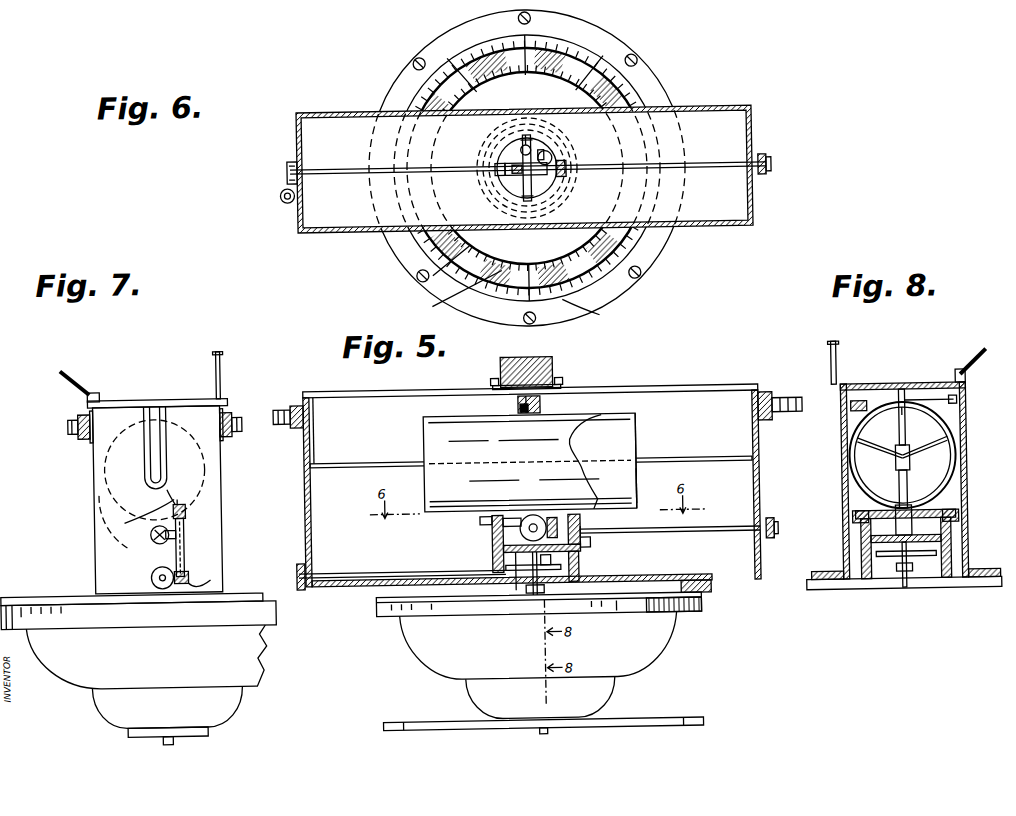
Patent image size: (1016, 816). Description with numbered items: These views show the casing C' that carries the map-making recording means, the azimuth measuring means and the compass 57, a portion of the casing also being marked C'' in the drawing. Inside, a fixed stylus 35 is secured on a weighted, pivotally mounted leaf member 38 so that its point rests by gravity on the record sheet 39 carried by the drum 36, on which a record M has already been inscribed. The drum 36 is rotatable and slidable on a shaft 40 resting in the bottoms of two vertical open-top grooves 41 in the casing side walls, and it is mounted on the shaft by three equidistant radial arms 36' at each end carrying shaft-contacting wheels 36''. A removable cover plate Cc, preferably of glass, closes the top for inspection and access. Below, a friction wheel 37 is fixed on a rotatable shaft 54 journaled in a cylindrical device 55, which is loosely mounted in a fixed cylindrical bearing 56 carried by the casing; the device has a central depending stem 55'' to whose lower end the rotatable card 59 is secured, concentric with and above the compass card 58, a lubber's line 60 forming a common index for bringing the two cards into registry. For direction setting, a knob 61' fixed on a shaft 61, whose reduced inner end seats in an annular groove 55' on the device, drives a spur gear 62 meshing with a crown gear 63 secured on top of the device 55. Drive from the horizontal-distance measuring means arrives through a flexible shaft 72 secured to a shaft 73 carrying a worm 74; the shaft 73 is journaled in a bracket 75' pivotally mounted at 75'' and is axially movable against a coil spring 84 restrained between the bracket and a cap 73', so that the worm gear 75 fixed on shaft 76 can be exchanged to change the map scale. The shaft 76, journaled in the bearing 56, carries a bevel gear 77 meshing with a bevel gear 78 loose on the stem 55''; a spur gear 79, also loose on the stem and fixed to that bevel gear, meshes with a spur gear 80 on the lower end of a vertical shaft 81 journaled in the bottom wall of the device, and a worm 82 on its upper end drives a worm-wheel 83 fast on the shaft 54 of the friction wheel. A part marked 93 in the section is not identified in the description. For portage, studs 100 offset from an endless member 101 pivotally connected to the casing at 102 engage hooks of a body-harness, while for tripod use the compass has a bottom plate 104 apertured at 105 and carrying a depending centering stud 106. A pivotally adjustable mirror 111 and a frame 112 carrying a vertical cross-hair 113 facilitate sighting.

In FIG. 5, the fixed stylus 35 is at (540, 400).
In FIG. 8, the fixed stylus 35 is at (906, 395).
In FIG. 5, the drum 36 is at (660, 466).
In FIG. 7, the drum 36 is at (93, 522).
In FIG. 8, the drum 36 is at (922, 454).
In FIG. 8, the arms 36' is at (857, 469).
In FIG. 8, the shaft-contacting wheels 36'' is at (879, 475).
In FIG. 6, the friction wheel 37 is at (520, 182).
In FIG. 5, the friction wheel 37 is at (503, 524).
In FIG. 8, the friction wheel 37 is at (912, 512).
In FIG. 5, the leaf member 38 is at (538, 406).
In FIG. 8, the leaf member 38 is at (930, 398).
In FIG. 5, the record sheet 39 is at (638, 427).
In FIG. 8, the record sheet 39 is at (945, 430).
In FIG. 5, the shaft 40 is at (360, 466).
In FIG. 7, the shaft 40 is at (205, 468).
In FIG. 5, the grooves 41 is at (320, 442).
In FIG. 7, the grooves 41 is at (160, 425).
In FIG. 6, the shaft 54 is at (548, 176).
In FIG. 5, the shaft 54 is at (492, 545).
In FIG. 8, the shaft 54 is at (860, 538).
In FIG. 5, the cylindrical device 55 is at (574, 572).
In FIG. 8, the cylindrical device 55 is at (932, 526).
In FIG. 5, the annular groove 55' is at (512, 549).
In FIG. 8, the stem 55'' is at (902, 584).
In FIG. 5, the fixed cylindrical bearing 56 is at (580, 568).
In FIG. 8, the fixed cylindrical bearing 56 is at (950, 540).
In FIG. 6, the compass 57 is at (398, 80).
In FIG. 5, the compass 57 is at (418, 650).
In FIG. 7, the compass 57 is at (252, 665).
In FIG. 6, the compass card 58 is at (615, 292).
In FIG. 5, the compass card 58 is at (696, 586).
In FIG. 6, the rotatable card 59 is at (585, 313).
In FIG. 5, the rotatable card 59 is at (485, 600).
In FIG. 7, the rotatable card 59 is at (139, 611).
In FIG. 8, the rotatable card 59 is at (856, 590).
In FIG. 6, the lubber's line 60 is at (459, 294).
In FIG. 6, the shaft 61 is at (528, 156).
In FIG. 5, the shaft 61 is at (658, 519).
In FIG. 6, the knob 61' is at (784, 158).
In FIG. 5, the knob 61' is at (784, 511).
In FIG. 6, the spur gear 62 is at (566, 170).
In FIG. 5, the spur gear 62 is at (582, 540).
In FIG. 6, the crown gear 63 is at (560, 148).
In FIG. 5, the crown gear 63 is at (482, 520).
In FIG. 8, the crown gear 63 is at (855, 520).
In FIG. 7, the flexible shaft 72 is at (205, 632).
In FIG. 7, the shaft 73 is at (212, 546).
In FIG. 7, the cap 73' is at (215, 493).
In FIG. 6, the worm 74 is at (283, 200).
In FIG. 7, the worm 74 is at (190, 576).
In FIG. 5, the worm gear 75 is at (298, 588).
In FIG. 7, the worm gear 75 is at (137, 622).
In FIG. 6, the bracket 75' is at (277, 153).
In FIG. 7, the bracket 75' is at (149, 578).
In FIG. 7, the pivot 75'' is at (153, 546).
In FIG. 6, the shaft 76 is at (480, 168).
In FIG. 5, the shaft 76 is at (370, 570).
In FIG. 7, the shaft 76 is at (163, 590).
In FIG. 6, the bevel gear 77 is at (497, 172).
In FIG. 5, the bevel gear 77 is at (510, 595).
In FIG. 5, the bevel gear 78 is at (548, 572).
In FIG. 8, the bevel gear 78 is at (925, 556).
In FIG. 5, the spur gear 79 is at (528, 595).
In FIG. 8, the spur gear 79 is at (890, 560).
In FIG. 5, the spur gear 80 is at (548, 565).
In FIG. 6, the vertical shaft 81 is at (545, 152).
In FIG. 5, the vertical shaft 81 is at (600, 532).
In FIG. 6, the worm 82 is at (552, 155).
In FIG. 5, the worm 82 is at (575, 524).
In FIG. 6, the worm-wheel 83 is at (532, 148).
In FIG. 5, the worm-wheel 83 is at (538, 517).
In FIG. 7, the coil spring 84 is at (190, 512).
In FIG. 8, the support plate 93 is at (958, 512).
In FIG. 5, the studs 100 is at (288, 405).
In FIG. 5, the endless member 101 is at (295, 426).
In FIG. 7, the endless member 101 is at (85, 438).
In FIG. 7, the pivots 102 is at (72, 428).
In FIG. 5, the plate 104 is at (460, 728).
In FIG. 7, the plate 104 is at (138, 737).
In FIG. 5, the apertures 105 is at (405, 718).
In FIG. 7, the apertures 105 is at (165, 727).
In FIG. 5, the depending stud 106 is at (544, 732).
In FIG. 7, the depending stud 106 is at (170, 745).
In FIG. 5, the mirror 111 is at (556, 365).
In FIG. 7, the mirror 111 is at (85, 378).
In FIG. 8, the mirror 111 is at (990, 358).
In FIG. 7, the frame 112 is at (217, 353).
In FIG. 8, the frame 112 is at (838, 362).
In FIG. 7, the vertical cross-hair 113 is at (225, 376).
In FIG. 8, the vertical cross-hair 113 is at (832, 360).
In FIG. 6, the casing C' is at (524, 156).
In FIG. 5, the casing C' is at (522, 488).
In FIG. 8, the casing C' is at (892, 481).
In FIG. 6, the casing C'' is at (722, 234).
In FIG. 7, the casing C'' is at (148, 497).
In FIG. 5, the cover plate Cc is at (705, 388).
In FIG. 5, the record M is at (580, 435).